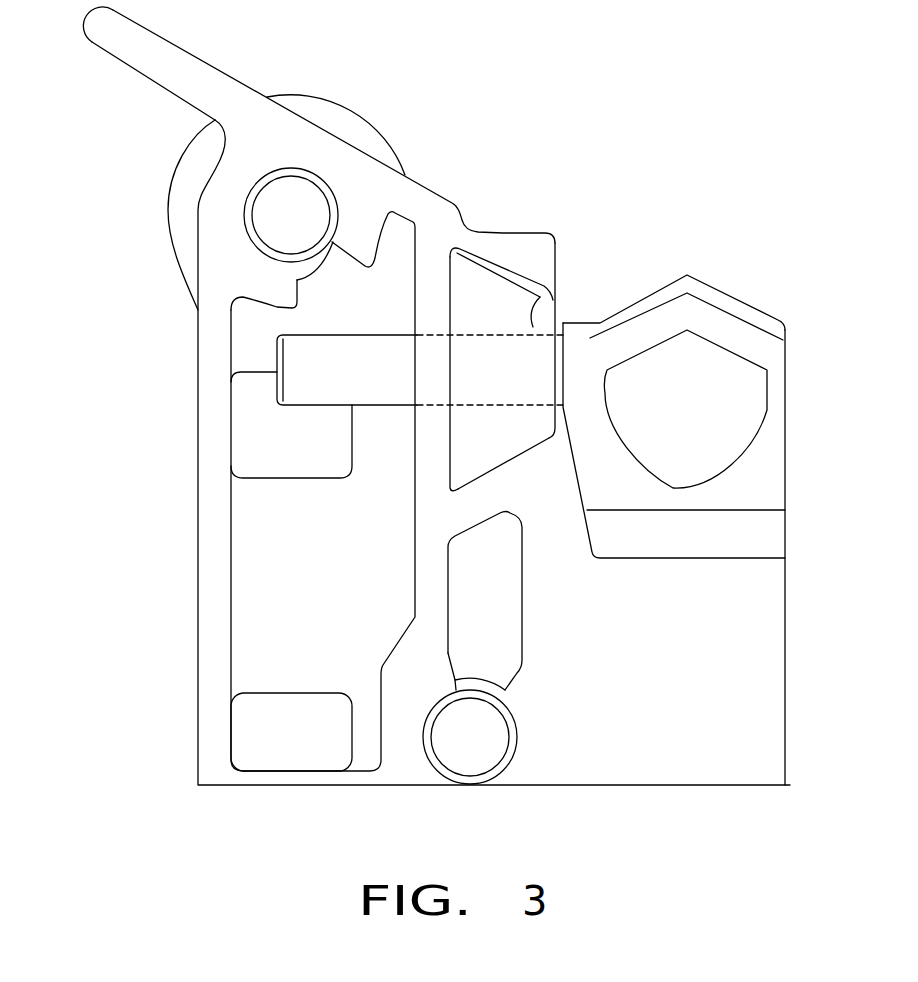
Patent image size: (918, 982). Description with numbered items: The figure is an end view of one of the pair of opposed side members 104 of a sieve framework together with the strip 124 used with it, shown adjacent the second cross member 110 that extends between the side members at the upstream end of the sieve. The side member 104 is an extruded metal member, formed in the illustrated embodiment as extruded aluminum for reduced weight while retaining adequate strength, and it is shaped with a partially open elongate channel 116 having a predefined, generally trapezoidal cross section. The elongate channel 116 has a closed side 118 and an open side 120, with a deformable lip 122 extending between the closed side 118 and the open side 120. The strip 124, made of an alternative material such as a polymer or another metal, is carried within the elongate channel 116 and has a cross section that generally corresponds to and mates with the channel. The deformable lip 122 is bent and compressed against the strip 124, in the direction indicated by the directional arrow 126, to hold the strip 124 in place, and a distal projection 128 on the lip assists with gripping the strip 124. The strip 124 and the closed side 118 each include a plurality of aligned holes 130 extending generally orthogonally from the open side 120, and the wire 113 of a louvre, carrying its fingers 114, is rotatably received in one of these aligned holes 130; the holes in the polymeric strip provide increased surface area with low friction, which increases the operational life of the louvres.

The side member 104 is at (197, 610).
The second cross member 110 is at (707, 763).
The wire 113 is at (277, 348).
The fingers 114 is at (757, 317).
The elongate channel 116 is at (447, 462).
The closed side 118 is at (433, 423).
The open side 120 is at (561, 439).
The deformable lip 122 is at (537, 232).
The strip 124 is at (472, 273).
The directional arrow 126 is at (574, 293).
The distal projection 128 is at (533, 327).
The aligned holes 130 is at (512, 408).